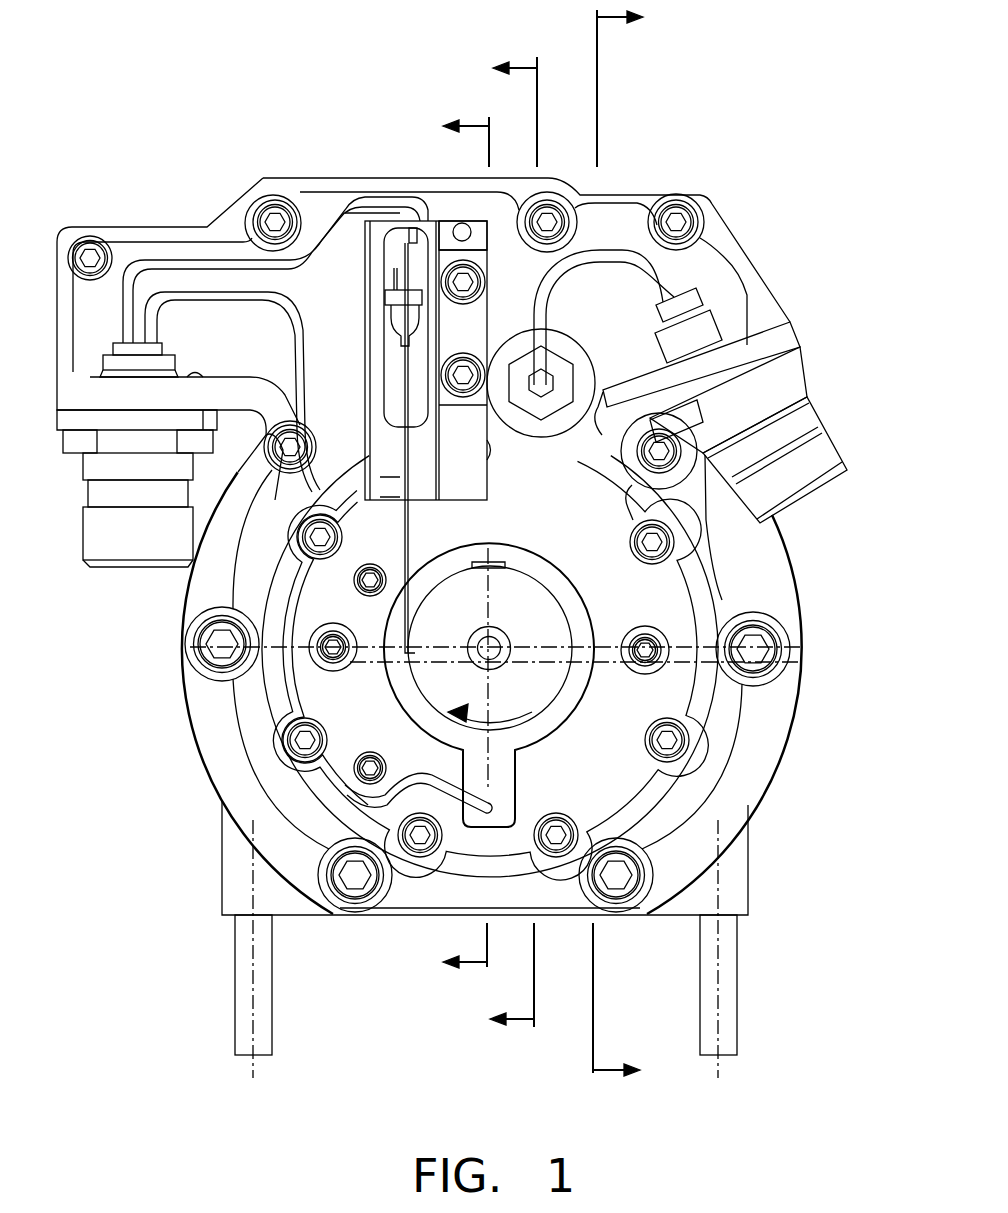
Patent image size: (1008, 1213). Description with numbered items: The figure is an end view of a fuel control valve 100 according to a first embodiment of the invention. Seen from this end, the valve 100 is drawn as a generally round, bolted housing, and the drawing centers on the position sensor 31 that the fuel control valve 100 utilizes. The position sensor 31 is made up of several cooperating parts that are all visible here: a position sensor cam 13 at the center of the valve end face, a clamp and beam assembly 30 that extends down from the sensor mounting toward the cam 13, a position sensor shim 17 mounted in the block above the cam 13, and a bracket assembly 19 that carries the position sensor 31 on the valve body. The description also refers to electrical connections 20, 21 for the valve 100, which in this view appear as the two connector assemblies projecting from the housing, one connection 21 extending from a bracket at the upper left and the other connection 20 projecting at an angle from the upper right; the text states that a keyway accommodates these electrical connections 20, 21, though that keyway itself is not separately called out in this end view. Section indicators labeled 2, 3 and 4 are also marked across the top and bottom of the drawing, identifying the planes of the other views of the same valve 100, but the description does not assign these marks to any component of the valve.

The fuel control valve 100 is at (415, 1083).
The position sensor cam 13 is at (417, 703).
The position sensor shim 17 is at (418, 462).
The bracket assembly 19 is at (460, 226).
The electrical connection 20 is at (833, 432).
The electrical connection 21 is at (130, 568).
The clamp and beam assembly 30 is at (390, 477).
The position sensor 31 is at (403, 592).
The section line 2- 2 is at (453, 548).
The section line 3- 3 is at (501, 547).
The section line 4- 4 is at (628, 547).